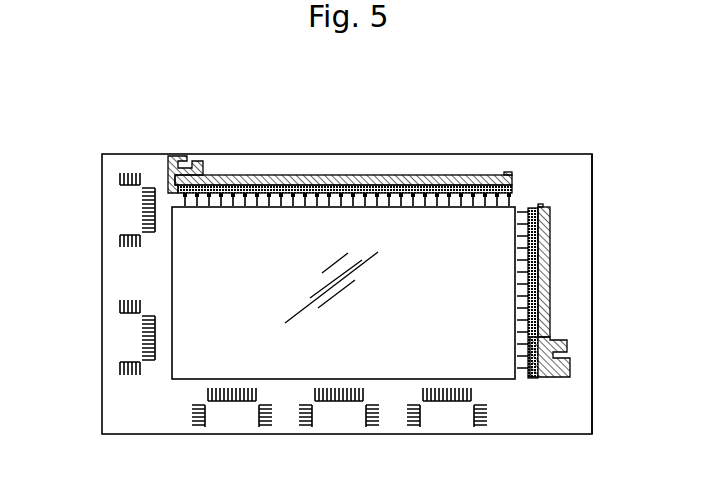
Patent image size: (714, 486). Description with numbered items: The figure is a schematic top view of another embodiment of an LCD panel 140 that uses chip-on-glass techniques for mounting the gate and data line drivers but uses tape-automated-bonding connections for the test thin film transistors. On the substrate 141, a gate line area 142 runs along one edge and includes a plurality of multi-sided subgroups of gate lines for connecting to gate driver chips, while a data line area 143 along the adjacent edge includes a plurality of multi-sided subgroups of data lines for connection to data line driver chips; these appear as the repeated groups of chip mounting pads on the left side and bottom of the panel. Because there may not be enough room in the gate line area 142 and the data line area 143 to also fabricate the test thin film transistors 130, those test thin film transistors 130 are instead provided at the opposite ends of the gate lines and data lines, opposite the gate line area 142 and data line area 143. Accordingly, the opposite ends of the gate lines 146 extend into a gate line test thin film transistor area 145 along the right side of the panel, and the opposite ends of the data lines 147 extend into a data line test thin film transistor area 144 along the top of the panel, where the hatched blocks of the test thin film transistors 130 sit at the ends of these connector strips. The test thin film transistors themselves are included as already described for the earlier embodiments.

The LCD panel 140 is at (140, 134).
The test thin film transistors 130 is at (211, 161).
The data line test thin film transistor area 144 is at (392, 158).
The gate lines 146 is at (507, 198).
The data lines 147 is at (530, 200).
The gate line test thin film transistor area 145 is at (577, 258).
The gate line area 142 is at (112, 270).
The substrate 141 is at (112, 383).
The data line area 143 is at (396, 431).